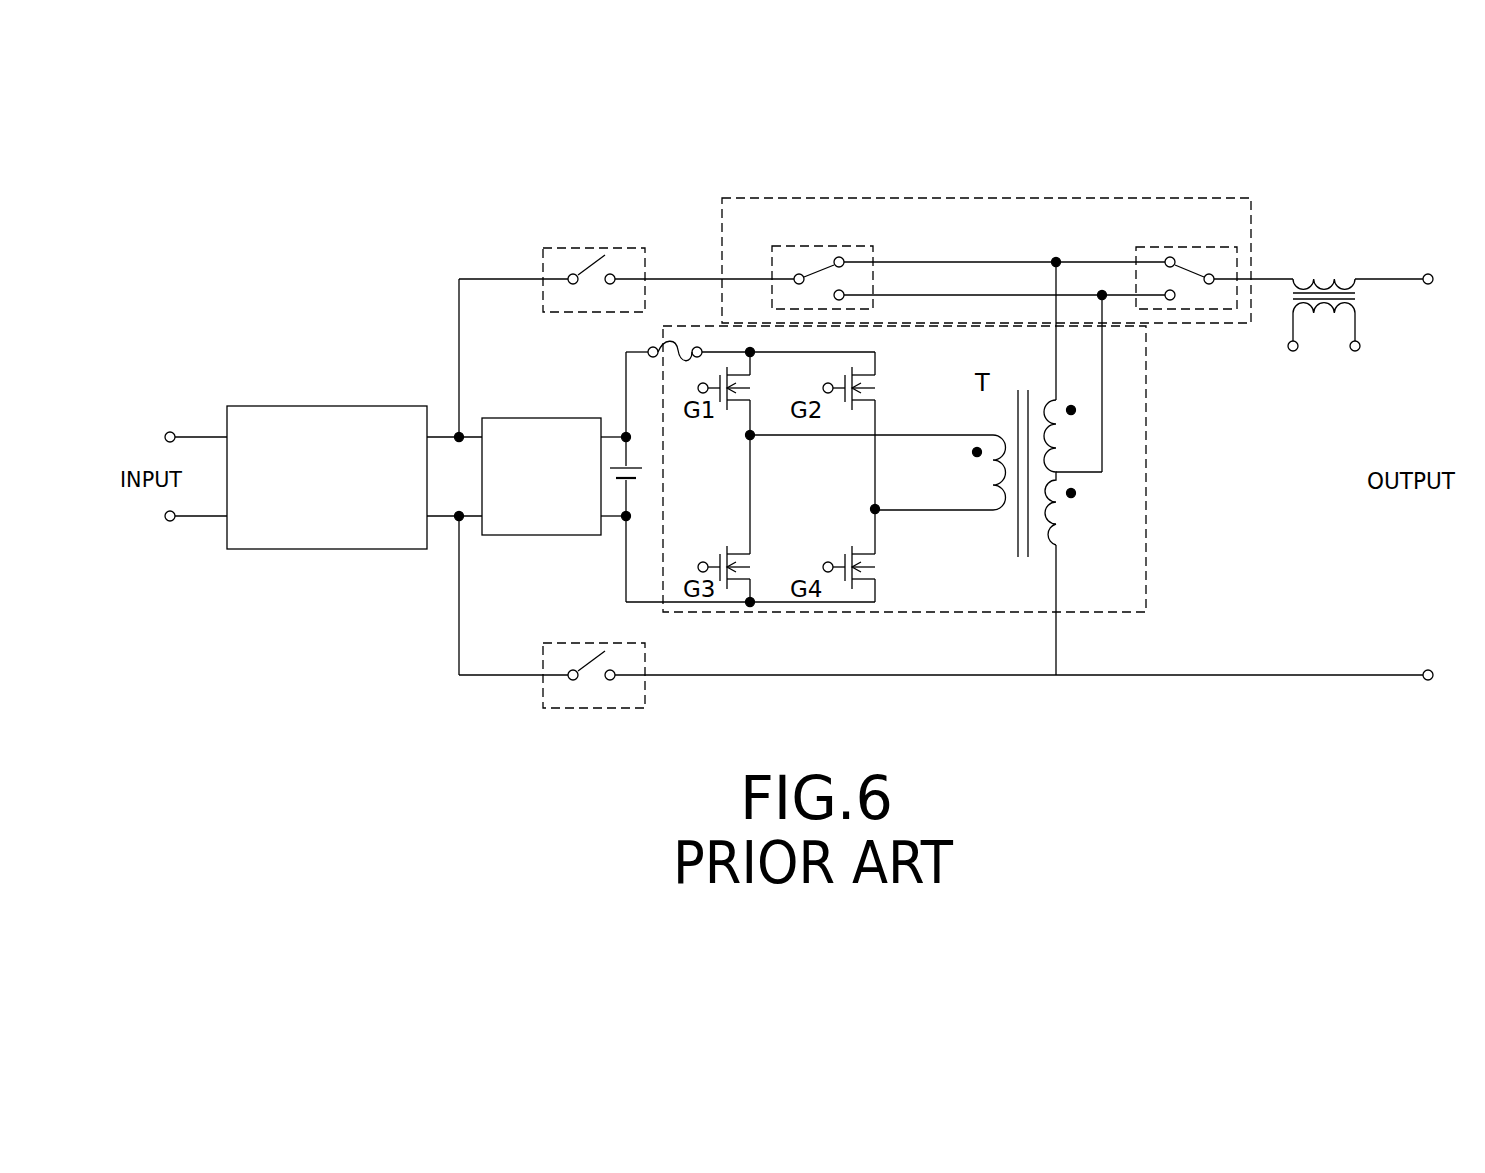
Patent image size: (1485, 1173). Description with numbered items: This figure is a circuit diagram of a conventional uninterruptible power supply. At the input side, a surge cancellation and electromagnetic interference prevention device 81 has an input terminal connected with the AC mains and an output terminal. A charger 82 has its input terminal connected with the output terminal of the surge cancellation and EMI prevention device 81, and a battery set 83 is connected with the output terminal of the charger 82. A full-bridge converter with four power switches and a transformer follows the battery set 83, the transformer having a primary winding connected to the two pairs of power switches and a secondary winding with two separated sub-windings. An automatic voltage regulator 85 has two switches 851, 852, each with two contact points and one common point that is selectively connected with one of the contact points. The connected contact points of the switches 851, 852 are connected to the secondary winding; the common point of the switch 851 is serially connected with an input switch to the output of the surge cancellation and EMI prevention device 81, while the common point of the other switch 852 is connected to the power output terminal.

The surge cancellation and electromagnetic interference (EMI) prevention device 81 is at (312, 549).
The charger 82 is at (510, 535).
The battery set 83 is at (635, 476).
The automatic voltage regulator 85 is at (986, 237).
The switch 851 is at (803, 245).
The switch 852 is at (1155, 246).